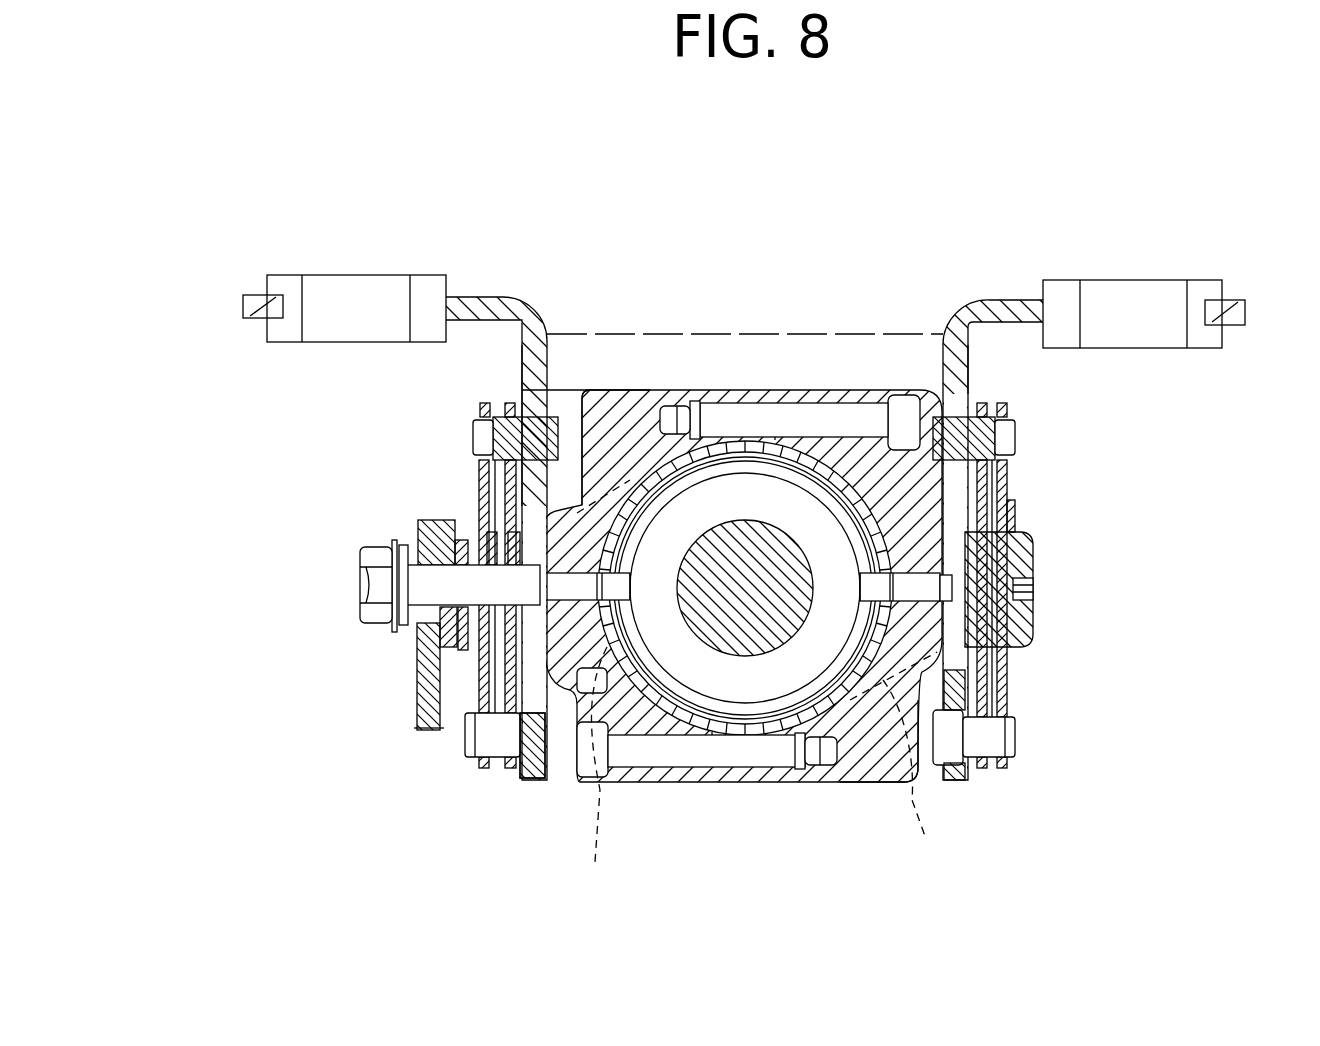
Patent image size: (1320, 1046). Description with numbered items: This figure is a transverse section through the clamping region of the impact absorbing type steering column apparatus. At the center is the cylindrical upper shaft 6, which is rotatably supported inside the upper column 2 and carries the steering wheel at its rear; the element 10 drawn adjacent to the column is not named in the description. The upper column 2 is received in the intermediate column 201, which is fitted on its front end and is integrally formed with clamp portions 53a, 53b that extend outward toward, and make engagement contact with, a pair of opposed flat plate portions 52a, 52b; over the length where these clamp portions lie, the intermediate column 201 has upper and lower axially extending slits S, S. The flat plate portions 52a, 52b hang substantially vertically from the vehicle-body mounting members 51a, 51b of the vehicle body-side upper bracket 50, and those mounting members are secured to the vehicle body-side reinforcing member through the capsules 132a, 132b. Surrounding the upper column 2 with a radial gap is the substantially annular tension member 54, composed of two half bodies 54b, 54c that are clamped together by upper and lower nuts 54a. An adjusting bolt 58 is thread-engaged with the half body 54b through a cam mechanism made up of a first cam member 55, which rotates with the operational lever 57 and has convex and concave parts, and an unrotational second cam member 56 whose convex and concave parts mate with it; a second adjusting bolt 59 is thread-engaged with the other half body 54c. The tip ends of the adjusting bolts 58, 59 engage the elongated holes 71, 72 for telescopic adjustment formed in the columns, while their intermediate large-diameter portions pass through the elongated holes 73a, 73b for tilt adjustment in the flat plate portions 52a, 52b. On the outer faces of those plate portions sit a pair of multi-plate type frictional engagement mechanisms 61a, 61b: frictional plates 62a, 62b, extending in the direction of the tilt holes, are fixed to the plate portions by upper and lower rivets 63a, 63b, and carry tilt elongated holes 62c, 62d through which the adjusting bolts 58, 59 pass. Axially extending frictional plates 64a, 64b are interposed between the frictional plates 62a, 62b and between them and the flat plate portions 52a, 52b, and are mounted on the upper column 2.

The upper column 2 is at (857, 476).
The upper shaft 6 is at (738, 522).
The bearing 10 is at (648, 440).
The vehicle body-side upper bracket 50 is at (716, 495).
The vehicle-body mounting member 51a is at (463, 293).
The vehicle-body mounting member 51b is at (1000, 297).
The flat plate portion 52a is at (522, 363).
The flat plate portion 52b is at (968, 362).
The clamp portion 53a is at (597, 687).
The clamp portion 53b is at (904, 755).
The tension member 54 is at (775, 782).
The nut 54a is at (740, 420).
The half body 54b is at (603, 417).
The half body 54c is at (866, 775).
The first cam member 55 is at (412, 728).
The second cam member 56 is at (455, 655).
The operational lever 57 is at (415, 688).
The adjusting bolt 58 is at (360, 585).
The adjusting bolt 59 is at (1033, 560).
The multi-plate type frictional engagement mechanism 61a is at (341, 637).
The multi-plate type frictional engagement mechanism 61b is at (1113, 584).
The frictional plate 62a is at (482, 466).
The frictional plate 62b is at (985, 490).
The tilt elongated hole 62c is at (490, 500).
The tilt elongated hole 62d is at (1005, 515).
The rivet 63a is at (470, 433).
The rivet 63b is at (1017, 433).
The frictional plate 64a is at (478, 527).
The frictional plate 64b is at (1013, 517).
The elongated hole 71 is at (633, 563).
The elongated hole 72 is at (632, 604).
The elongated hole for tilt adjustment 73a is at (533, 780).
The elongated hole for tilt adjustment 73b is at (957, 662).
The capsule 132a is at (340, 290).
The capsule 132b is at (1128, 295).
The intermediate column 201 is at (822, 462).
The slit S is at (775, 425).